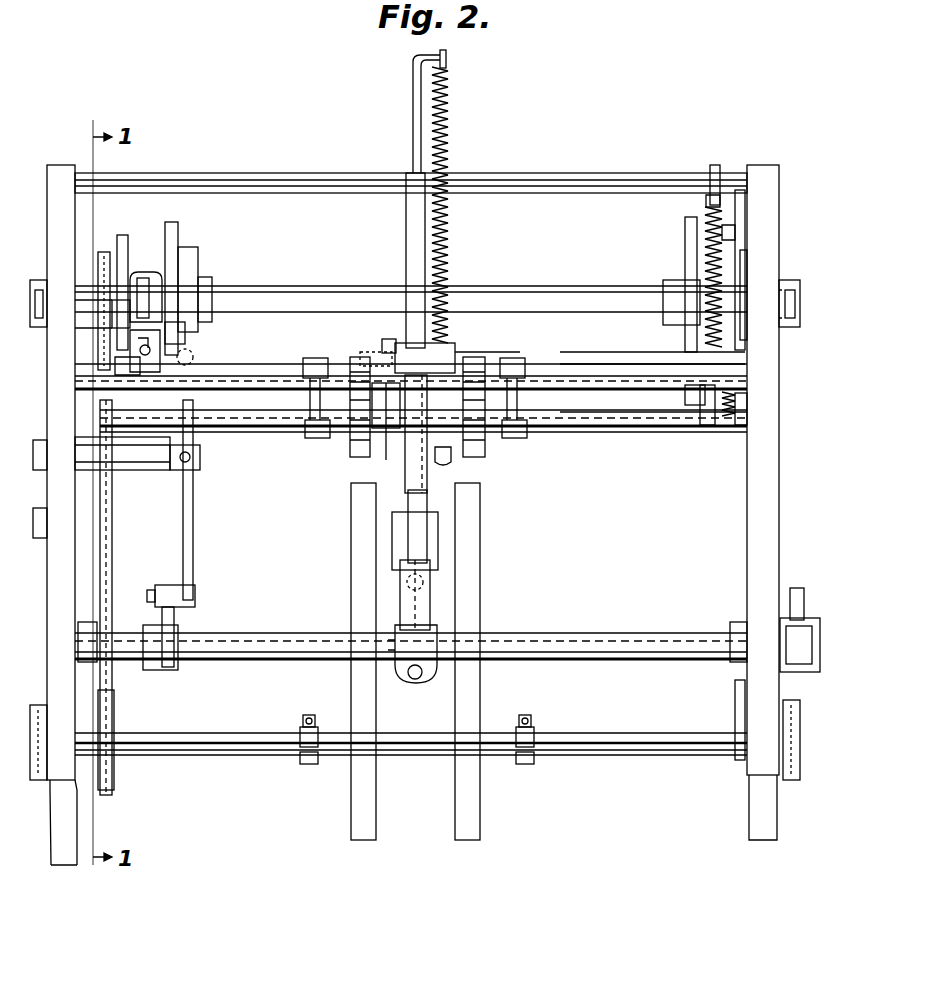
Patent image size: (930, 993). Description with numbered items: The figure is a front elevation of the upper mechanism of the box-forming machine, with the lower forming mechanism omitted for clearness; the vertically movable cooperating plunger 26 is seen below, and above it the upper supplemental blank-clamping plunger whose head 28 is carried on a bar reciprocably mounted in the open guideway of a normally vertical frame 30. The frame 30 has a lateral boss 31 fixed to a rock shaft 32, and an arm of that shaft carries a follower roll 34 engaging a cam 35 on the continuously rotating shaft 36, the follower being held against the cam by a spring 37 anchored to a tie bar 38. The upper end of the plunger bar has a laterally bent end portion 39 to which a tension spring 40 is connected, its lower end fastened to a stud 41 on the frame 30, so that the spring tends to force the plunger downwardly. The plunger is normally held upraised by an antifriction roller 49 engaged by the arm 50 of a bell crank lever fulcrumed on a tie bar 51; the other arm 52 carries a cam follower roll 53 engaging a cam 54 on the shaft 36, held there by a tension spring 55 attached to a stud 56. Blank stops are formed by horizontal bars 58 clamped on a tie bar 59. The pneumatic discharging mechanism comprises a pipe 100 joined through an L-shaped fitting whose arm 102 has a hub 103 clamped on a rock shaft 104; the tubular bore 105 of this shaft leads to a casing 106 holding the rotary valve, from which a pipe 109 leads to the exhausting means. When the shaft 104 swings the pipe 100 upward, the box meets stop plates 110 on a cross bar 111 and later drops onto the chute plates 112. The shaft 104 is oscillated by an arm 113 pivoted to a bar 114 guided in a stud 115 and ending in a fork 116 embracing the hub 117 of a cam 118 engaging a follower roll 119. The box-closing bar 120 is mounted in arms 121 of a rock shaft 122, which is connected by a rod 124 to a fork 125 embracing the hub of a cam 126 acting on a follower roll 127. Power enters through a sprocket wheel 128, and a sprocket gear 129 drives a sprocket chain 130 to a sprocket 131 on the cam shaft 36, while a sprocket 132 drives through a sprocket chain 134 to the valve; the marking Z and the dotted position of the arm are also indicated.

The connector Z is at (200, 458).
The cooperating plunger 26 is at (196, 433).
The head 28 is at (406, 248).
The frame 30 is at (405, 472).
The lateral boss 31 is at (452, 353).
The rock shaft 32 is at (496, 360).
The follower roll 34 is at (692, 406).
The cam 35 is at (685, 256).
The continuously rotating shaft 36 is at (490, 290).
The spring 37 is at (708, 214).
The tie bar 38 is at (625, 175).
The laterally bent end portion 39 is at (448, 57).
The tension spring 40 is at (447, 141).
The stud 41 is at (450, 462).
The antifriction roller 49 is at (382, 346).
The arm 50 is at (370, 360).
The tie bar 51 is at (650, 430).
The arm 52 is at (710, 236).
The cam follower roll 53 is at (748, 262).
The cam 54 is at (736, 196).
The tension spring 55 is at (726, 420).
The stud 56 is at (740, 426).
The horizontal bars 58 is at (303, 720).
The tie bar 59 is at (595, 745).
The pipe 100 is at (432, 582).
The arm 102 is at (428, 612).
The hub 103 is at (430, 683).
The rock shaft 104 is at (330, 660).
The tubular bore 105 is at (532, 644).
The casing 106 is at (806, 658).
The pipe 109 is at (797, 598).
The stop plates 110 is at (350, 442).
The cross bar 111 is at (566, 372).
The plates 112 is at (351, 556).
The arm 113 is at (178, 618).
The bar 114 is at (193, 512).
The stud 115 is at (145, 470).
The fork 116 is at (190, 250).
The hub 117 is at (210, 278).
The cam 118 is at (171, 222).
The follower roll 119 is at (180, 338).
The bar 120 is at (400, 430).
The arms 121 is at (314, 412).
The rock shaft 122 is at (590, 358).
The rod 124 is at (186, 345).
The fork 125 is at (148, 272).
The cam 126 is at (122, 235).
The follower roll 127 is at (112, 318).
The sprocket wheel 128 is at (47, 780).
The sprocket gear 129 is at (114, 716).
The sprocket chain 130 is at (112, 580).
The sprocket 131 is at (98, 256).
The sprocket 132 is at (792, 786).
The sprocket chain 134 is at (708, 720).